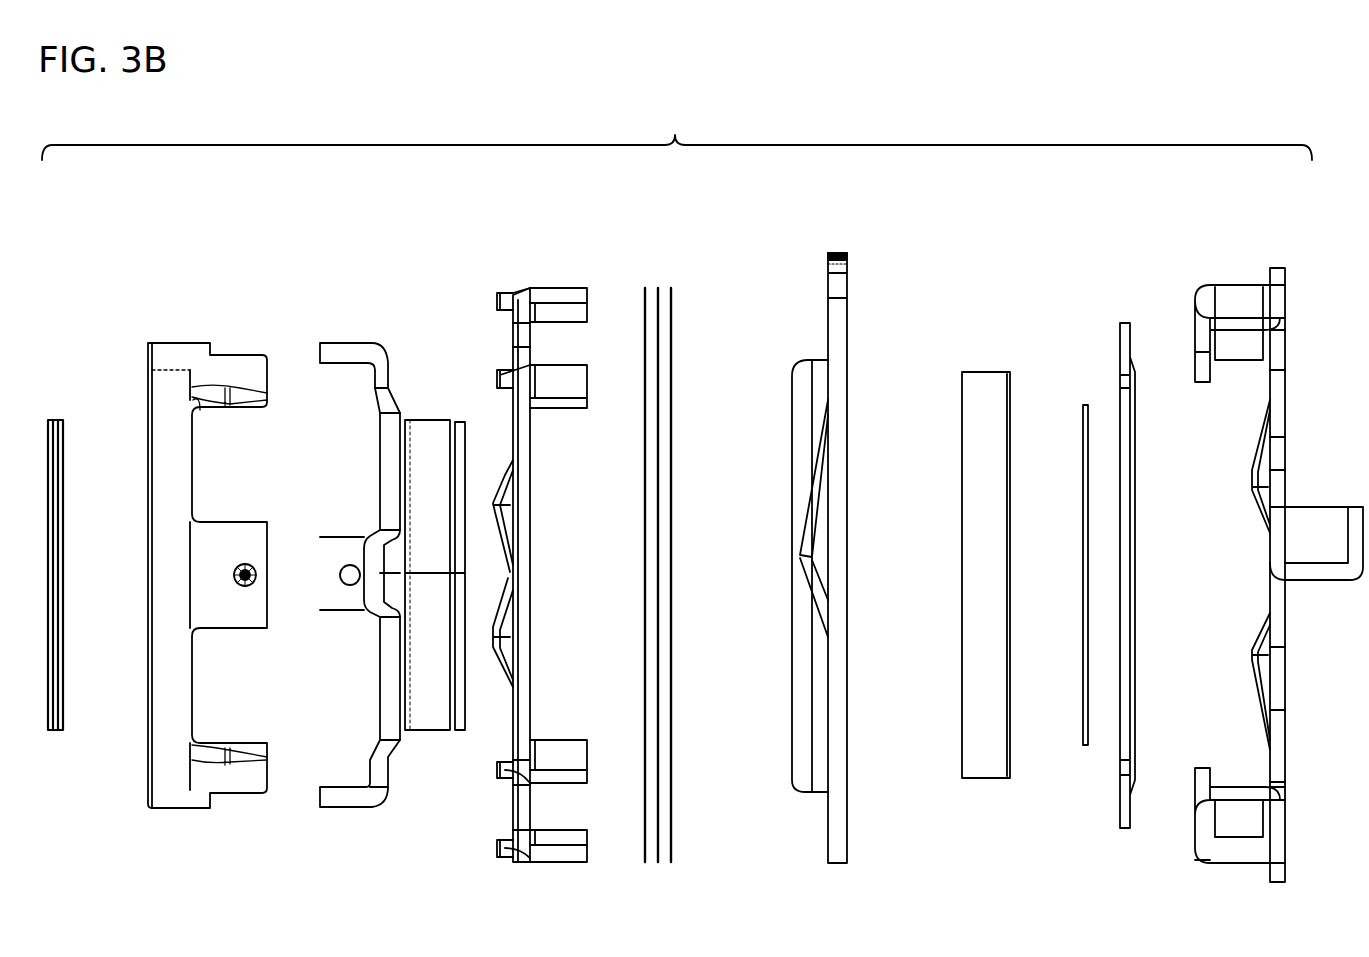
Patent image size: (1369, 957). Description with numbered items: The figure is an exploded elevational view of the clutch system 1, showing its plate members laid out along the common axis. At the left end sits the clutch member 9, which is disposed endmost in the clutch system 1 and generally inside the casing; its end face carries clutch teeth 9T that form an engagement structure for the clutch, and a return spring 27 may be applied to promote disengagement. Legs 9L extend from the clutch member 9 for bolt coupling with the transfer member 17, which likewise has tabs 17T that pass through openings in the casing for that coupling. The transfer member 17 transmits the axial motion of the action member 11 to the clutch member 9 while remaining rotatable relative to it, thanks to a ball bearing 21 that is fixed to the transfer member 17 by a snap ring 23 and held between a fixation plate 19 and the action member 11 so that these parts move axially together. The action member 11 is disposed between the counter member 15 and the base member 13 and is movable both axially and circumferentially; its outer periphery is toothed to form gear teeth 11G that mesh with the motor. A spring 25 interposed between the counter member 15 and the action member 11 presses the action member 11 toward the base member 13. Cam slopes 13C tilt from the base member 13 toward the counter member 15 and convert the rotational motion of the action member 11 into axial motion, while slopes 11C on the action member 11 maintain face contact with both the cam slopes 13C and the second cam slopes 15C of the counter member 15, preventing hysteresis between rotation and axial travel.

The clutch system 1 is at (677, 129).
The return spring 27 is at (56, 418).
The clutch member 9 is at (207, 529).
The legs 9L is at (233, 356).
The clutch teeth 9T is at (126, 780).
The transfer member 17 is at (392, 532).
The tabs 17T is at (343, 345).
The counter member 15 is at (497, 529).
The second cam slopes 15C is at (495, 615).
The spring 25 is at (655, 288).
The action member 11 is at (782, 512).
The gear teeth 11G is at (838, 252).
The slopes 11C is at (805, 522).
The ball bearing 21 is at (983, 372).
The snap ring 23 is at (1085, 405).
The fixation plate 19 is at (1122, 323).
The base member 13 is at (1257, 531).
The cam slopes 13C is at (1262, 452).